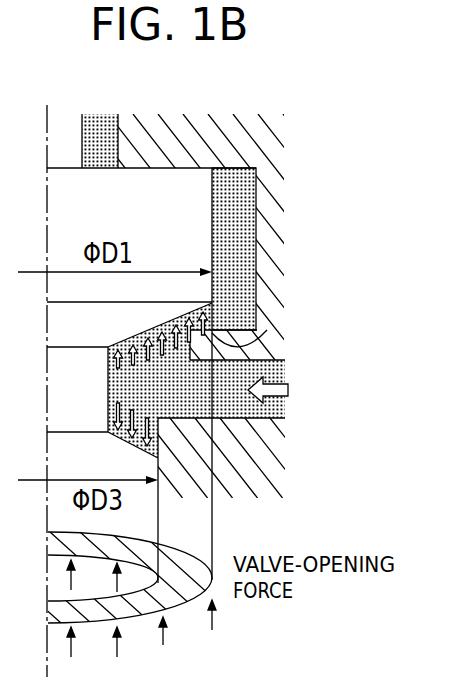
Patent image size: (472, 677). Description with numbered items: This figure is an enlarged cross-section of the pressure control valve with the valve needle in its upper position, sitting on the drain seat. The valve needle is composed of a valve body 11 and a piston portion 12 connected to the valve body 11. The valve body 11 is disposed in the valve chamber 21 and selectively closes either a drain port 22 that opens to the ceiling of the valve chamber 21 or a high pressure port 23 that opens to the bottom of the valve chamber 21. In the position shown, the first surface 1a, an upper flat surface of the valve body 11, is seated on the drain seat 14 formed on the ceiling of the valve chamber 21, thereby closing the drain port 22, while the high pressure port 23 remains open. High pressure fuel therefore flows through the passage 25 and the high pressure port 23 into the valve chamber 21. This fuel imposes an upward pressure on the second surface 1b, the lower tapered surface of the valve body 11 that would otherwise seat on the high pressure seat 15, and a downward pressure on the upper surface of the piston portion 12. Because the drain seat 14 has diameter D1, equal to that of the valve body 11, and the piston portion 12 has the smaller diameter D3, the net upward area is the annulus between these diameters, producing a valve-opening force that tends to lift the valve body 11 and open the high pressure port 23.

The drain port 22 is at (118, 141).
The drain seat 14 is at (197, 168).
The first surface 1a is at (170, 168).
The valve body 11 is at (187, 222).
The valve chamber 21 is at (233, 247).
The high pressure seat 15 is at (261, 340).
The second surface 1b is at (267, 330).
The passage 25 is at (238, 403).
The high pressure port 23 is at (128, 457).
The piston portion 12 is at (227, 480).